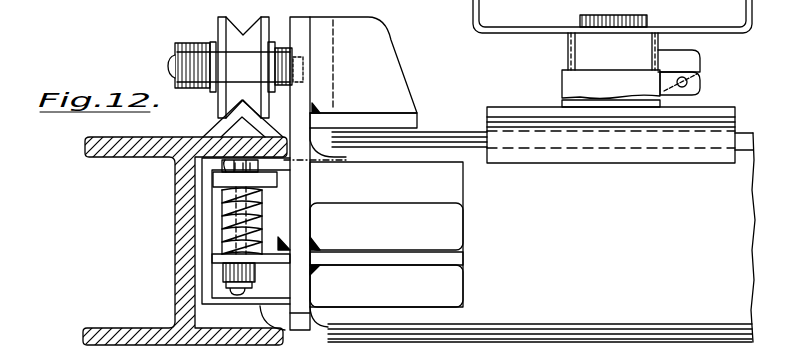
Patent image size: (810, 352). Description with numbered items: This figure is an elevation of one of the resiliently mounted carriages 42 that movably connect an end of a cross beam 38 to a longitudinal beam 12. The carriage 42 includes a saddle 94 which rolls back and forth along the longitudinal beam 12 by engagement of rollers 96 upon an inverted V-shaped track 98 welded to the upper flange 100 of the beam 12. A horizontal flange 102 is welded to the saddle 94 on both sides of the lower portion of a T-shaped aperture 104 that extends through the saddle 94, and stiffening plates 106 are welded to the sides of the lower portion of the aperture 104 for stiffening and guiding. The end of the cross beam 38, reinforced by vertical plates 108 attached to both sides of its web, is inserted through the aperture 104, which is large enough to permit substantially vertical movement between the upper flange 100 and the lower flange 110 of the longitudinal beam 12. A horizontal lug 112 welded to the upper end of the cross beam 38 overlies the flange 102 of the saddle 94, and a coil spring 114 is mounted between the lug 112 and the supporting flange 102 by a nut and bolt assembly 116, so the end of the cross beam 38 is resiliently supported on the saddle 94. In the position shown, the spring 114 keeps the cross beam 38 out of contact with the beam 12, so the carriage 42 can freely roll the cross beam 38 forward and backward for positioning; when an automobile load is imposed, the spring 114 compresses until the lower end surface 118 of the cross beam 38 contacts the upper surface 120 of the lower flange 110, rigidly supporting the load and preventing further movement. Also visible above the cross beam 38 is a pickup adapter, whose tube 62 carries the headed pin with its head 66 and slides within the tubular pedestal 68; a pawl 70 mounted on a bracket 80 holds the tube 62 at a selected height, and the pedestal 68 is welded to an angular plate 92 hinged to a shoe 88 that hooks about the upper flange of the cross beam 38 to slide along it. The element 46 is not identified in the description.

The longitudinal beam 12 is at (134, 169).
The cross beam 38 is at (437, 150).
The resiliently mounted carriage 42 is at (441, 351).
The housing 46 is at (757, 3).
The tube 62 is at (585, 52).
The head 66 is at (631, 15).
The tubular base or pedestal 68 is at (573, 85).
The pawl 70 is at (697, 62).
The bracket 80 is at (698, 88).
The shoe 88 is at (490, 122).
The angular plate 92 is at (728, 113).
The saddle 94 is at (401, 60).
The roller 96 is at (222, 33).
The inverted V-shaped track 98 is at (218, 131).
The upper flange 100 is at (88, 146).
The horizontal flange 102 is at (226, 254).
The T-shaped aperture 104 is at (200, 176).
The stiffening plate 106 is at (440, 287).
The vertical plate 108 is at (440, 187).
The lower flange 110 is at (86, 330).
The horizontal lug 112 is at (221, 179).
The coil spring 114 is at (230, 215).
The nut and bolt assembly 116 is at (223, 281).
The lower end surface 118 is at (292, 334).
The upper surface 120 is at (226, 326).